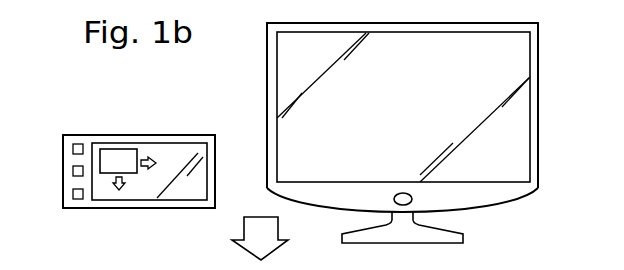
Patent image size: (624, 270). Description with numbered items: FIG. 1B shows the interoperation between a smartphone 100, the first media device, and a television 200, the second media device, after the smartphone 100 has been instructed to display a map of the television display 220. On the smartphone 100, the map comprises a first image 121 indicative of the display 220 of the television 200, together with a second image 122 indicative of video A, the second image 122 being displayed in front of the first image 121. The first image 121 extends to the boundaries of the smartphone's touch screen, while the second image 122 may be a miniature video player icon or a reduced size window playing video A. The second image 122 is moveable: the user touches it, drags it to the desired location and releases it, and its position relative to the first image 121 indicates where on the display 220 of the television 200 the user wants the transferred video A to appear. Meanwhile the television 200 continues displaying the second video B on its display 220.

The smartphone 100 is at (63, 158).
The first image 121 is at (172, 200).
The second image 122 is at (108, 149).
The television 200 is at (539, 53).
The display 220 is at (539, 135).